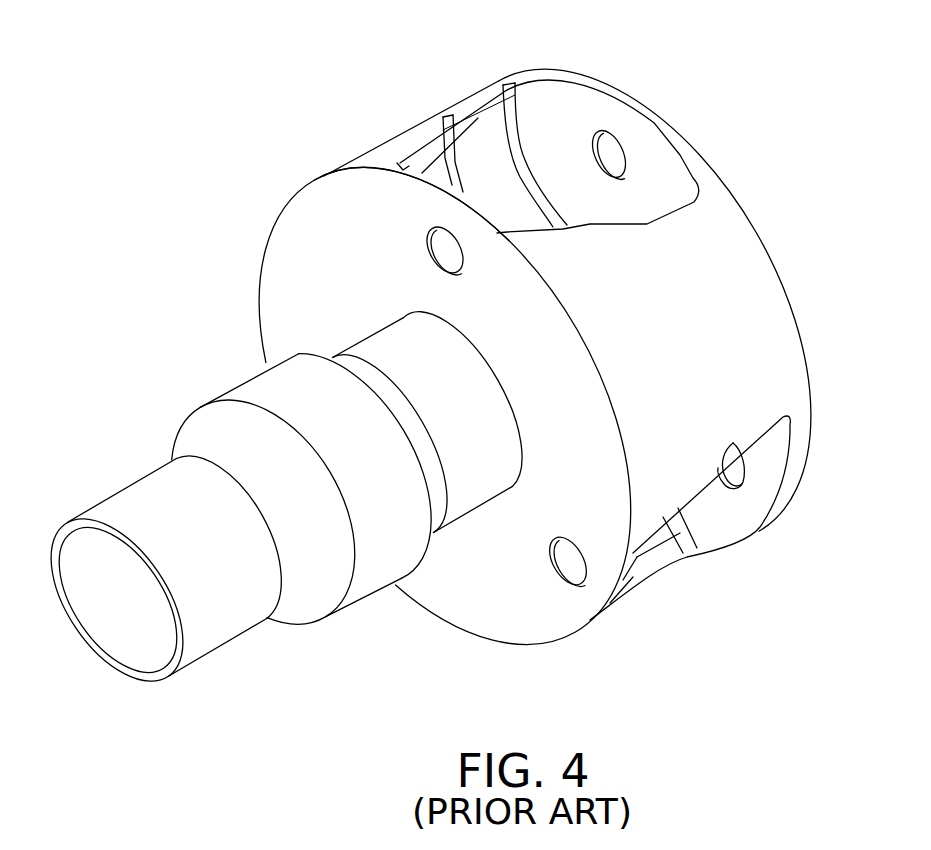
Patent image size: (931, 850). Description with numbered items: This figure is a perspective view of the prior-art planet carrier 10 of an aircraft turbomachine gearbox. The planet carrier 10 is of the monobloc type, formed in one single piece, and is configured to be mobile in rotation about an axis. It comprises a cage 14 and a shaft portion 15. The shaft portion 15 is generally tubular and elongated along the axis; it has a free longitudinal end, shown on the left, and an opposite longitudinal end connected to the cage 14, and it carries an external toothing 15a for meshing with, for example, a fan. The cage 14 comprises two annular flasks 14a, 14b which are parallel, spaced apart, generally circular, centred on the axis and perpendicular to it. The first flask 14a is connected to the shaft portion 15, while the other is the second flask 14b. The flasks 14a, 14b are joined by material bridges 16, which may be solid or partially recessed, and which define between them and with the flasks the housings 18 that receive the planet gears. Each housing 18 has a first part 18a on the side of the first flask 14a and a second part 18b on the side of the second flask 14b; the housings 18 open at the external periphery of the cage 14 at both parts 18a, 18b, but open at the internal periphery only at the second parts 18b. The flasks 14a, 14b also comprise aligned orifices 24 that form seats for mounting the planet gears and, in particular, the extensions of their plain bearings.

The planet carrier 10 is at (390, 760).
The cage 14 is at (548, 652).
The first flask 14a is at (405, 200).
The second flask 14b is at (580, 100).
The shaft portion 15 is at (194, 640).
The external toothing 15a is at (370, 583).
The material bridges 16 is at (750, 265).
The housings 18 is at (543, 100).
The first part of housing 18a is at (445, 152).
The second part of housing 18b is at (480, 113).
The orifices 24 is at (577, 585).